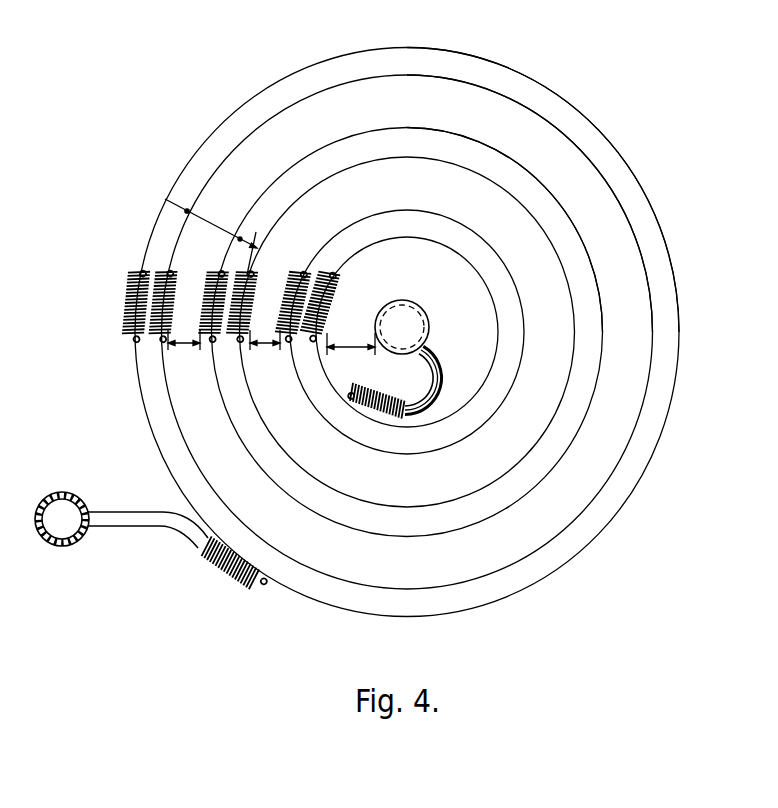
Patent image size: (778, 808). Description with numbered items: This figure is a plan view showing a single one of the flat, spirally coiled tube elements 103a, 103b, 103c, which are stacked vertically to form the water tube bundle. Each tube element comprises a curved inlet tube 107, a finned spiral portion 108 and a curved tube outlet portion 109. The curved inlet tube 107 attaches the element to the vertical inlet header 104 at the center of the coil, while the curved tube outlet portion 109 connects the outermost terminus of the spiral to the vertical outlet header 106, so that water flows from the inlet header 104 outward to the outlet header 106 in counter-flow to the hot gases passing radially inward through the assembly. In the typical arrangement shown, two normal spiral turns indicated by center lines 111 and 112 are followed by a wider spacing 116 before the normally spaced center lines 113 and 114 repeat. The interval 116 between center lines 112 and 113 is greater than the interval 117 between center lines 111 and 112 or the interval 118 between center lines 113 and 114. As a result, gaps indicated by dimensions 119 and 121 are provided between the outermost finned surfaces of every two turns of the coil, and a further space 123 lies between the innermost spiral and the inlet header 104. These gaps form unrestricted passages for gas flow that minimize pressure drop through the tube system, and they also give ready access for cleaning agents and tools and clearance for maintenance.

The spiral tube element 103a is at (510, 52).
The spiral tube element 103b is at (530, 168).
The spiral tube element 103c is at (567, 168).
The vertical inlet header 104 is at (417, 322).
The vertical outlet header 106 is at (68, 506).
The curved inlet tube 107 is at (433, 360).
The finned spiral portion 108 is at (357, 395).
The curved tube outlet portion 109 is at (147, 512).
The center line 111 is at (327, 60).
The center line 112 is at (430, 79).
The center line 113 is at (271, 179).
The center line 114 is at (321, 179).
The wider spacing 116 is at (197, 217).
The interval 117 is at (165, 199).
The interval 118 is at (247, 227).
The space 119 is at (184, 348).
The space 121 is at (265, 348).
The space 123 is at (351, 350).